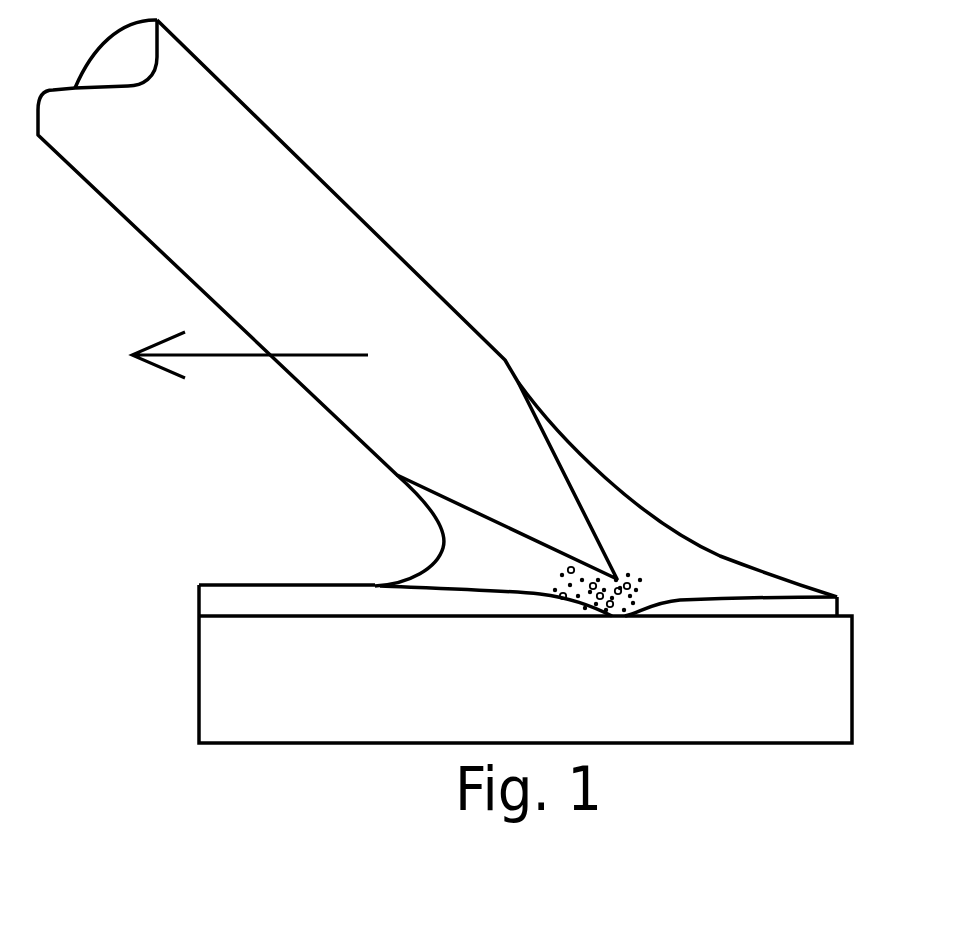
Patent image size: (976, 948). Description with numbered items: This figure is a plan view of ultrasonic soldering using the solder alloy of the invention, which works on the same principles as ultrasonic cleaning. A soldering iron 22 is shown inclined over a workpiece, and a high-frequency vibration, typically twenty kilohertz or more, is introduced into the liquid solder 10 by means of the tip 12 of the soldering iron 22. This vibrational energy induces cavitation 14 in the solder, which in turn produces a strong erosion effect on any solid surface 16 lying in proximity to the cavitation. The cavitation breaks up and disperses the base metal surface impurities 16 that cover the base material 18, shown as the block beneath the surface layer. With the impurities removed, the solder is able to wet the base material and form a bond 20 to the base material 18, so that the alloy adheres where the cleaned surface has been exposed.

The liquid solder 10 is at (450, 543).
The tip 12 is at (588, 552).
The cavitation 14 is at (638, 583).
The solid surface / base metal surface impurities 16 is at (282, 595).
The base material 18 is at (560, 699).
The bond 20 is at (837, 603).
The soldering iron 22 is at (325, 294).